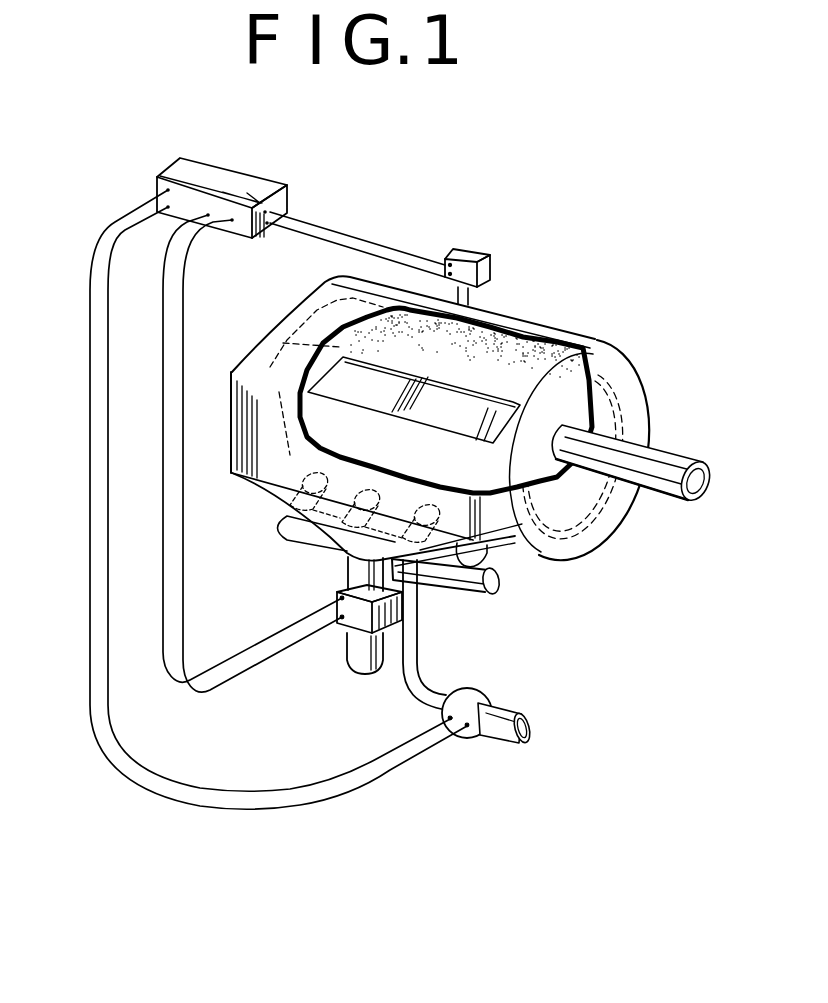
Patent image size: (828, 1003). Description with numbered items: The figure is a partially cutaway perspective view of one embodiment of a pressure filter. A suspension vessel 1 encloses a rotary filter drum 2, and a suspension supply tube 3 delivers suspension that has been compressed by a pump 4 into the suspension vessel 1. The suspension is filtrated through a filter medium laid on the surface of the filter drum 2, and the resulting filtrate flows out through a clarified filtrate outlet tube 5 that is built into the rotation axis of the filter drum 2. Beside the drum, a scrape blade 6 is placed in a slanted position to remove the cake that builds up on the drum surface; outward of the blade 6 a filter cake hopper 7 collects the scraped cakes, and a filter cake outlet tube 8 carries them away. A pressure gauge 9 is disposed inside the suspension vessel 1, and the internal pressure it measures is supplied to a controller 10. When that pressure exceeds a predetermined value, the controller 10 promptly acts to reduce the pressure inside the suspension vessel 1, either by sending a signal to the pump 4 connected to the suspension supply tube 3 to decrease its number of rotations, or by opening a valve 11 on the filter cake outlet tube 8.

The suspension vessel 1 is at (617, 352).
The rotary filter drum 2 is at (503, 340).
The suspension supply tube 3 is at (500, 547).
The pump 4 is at (466, 742).
The clarified filtrate outlet tube 5 is at (675, 463).
The scrape blade 6 is at (452, 412).
The filter cake hopper 7 is at (262, 487).
The filter cake outlet tube 8 is at (363, 667).
The pressure gauge 9 is at (487, 295).
The controller 10 is at (228, 177).
The valve 11 is at (352, 622).